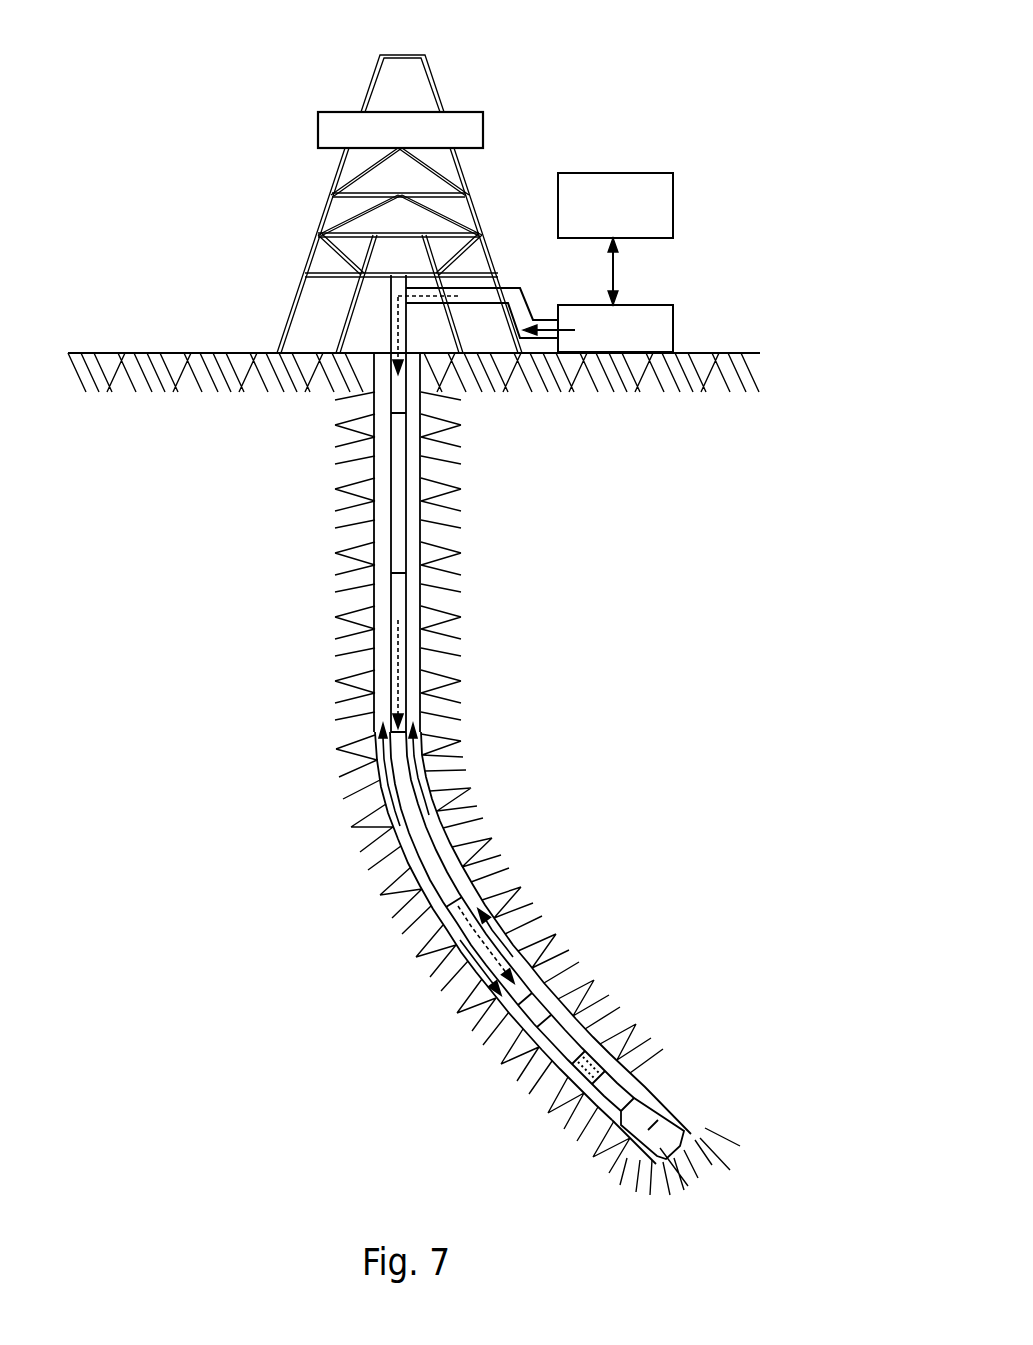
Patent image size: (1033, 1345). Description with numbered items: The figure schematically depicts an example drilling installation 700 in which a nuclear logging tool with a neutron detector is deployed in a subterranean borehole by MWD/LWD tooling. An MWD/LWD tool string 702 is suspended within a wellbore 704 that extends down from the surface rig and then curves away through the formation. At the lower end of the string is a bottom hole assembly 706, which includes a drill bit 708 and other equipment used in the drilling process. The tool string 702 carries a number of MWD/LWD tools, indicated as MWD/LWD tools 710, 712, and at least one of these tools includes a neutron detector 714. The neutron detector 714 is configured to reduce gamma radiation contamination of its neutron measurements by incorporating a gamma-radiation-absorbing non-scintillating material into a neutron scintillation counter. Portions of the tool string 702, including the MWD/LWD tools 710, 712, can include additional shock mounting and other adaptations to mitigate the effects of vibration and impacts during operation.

The drilling installation 700 is at (255, 50).
The MWD/LWD tool string 702 is at (440, 872).
The wellbore 704 is at (430, 583).
The bottom hole assembly 706 is at (528, 1127).
The drill bit 708 is at (658, 1120).
The MWD/LWD tool 710 is at (563, 1042).
The MWD/LWD tool 712 is at (597, 1050).
The neutron detector 714 is at (592, 1090).